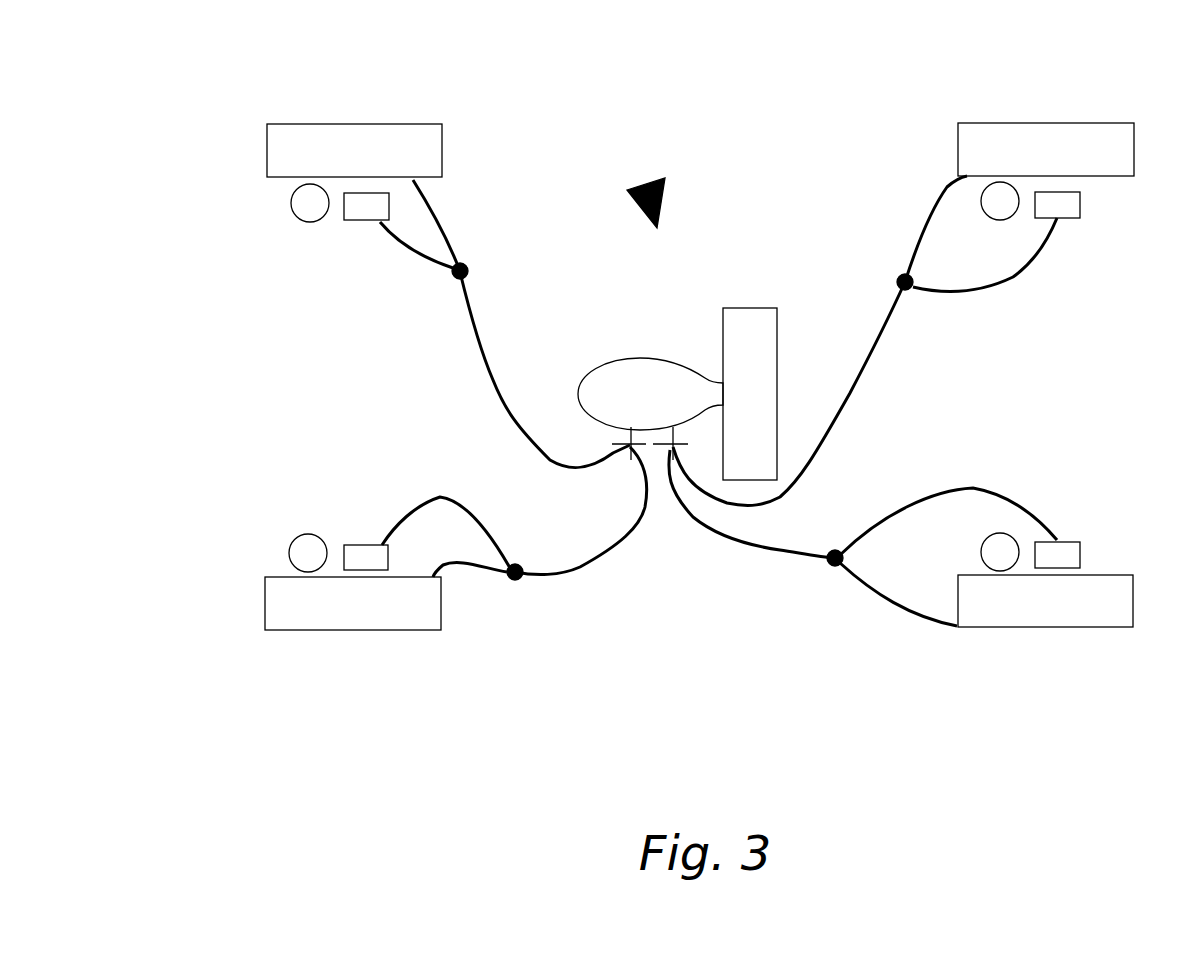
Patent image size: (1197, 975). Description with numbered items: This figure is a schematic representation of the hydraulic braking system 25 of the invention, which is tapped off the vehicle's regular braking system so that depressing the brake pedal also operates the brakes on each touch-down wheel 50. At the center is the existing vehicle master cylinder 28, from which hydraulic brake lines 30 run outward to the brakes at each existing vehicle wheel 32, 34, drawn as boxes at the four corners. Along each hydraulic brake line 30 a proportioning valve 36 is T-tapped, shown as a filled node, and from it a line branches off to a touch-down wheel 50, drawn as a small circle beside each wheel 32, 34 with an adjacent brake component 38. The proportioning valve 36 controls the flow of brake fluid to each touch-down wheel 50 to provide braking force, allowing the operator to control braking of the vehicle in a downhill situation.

The hydraulic braking system 25 is at (627, 148).
The central control unit 28 is at (658, 393).
The hydraulic brake lines 30 is at (495, 378).
The wheel 32 is at (367, 148).
The wheel 34 is at (1065, 145).
The proportioning valve 36 is at (452, 281).
The connector 38 is at (363, 205).
The touch-down wheel 50 is at (310, 203).